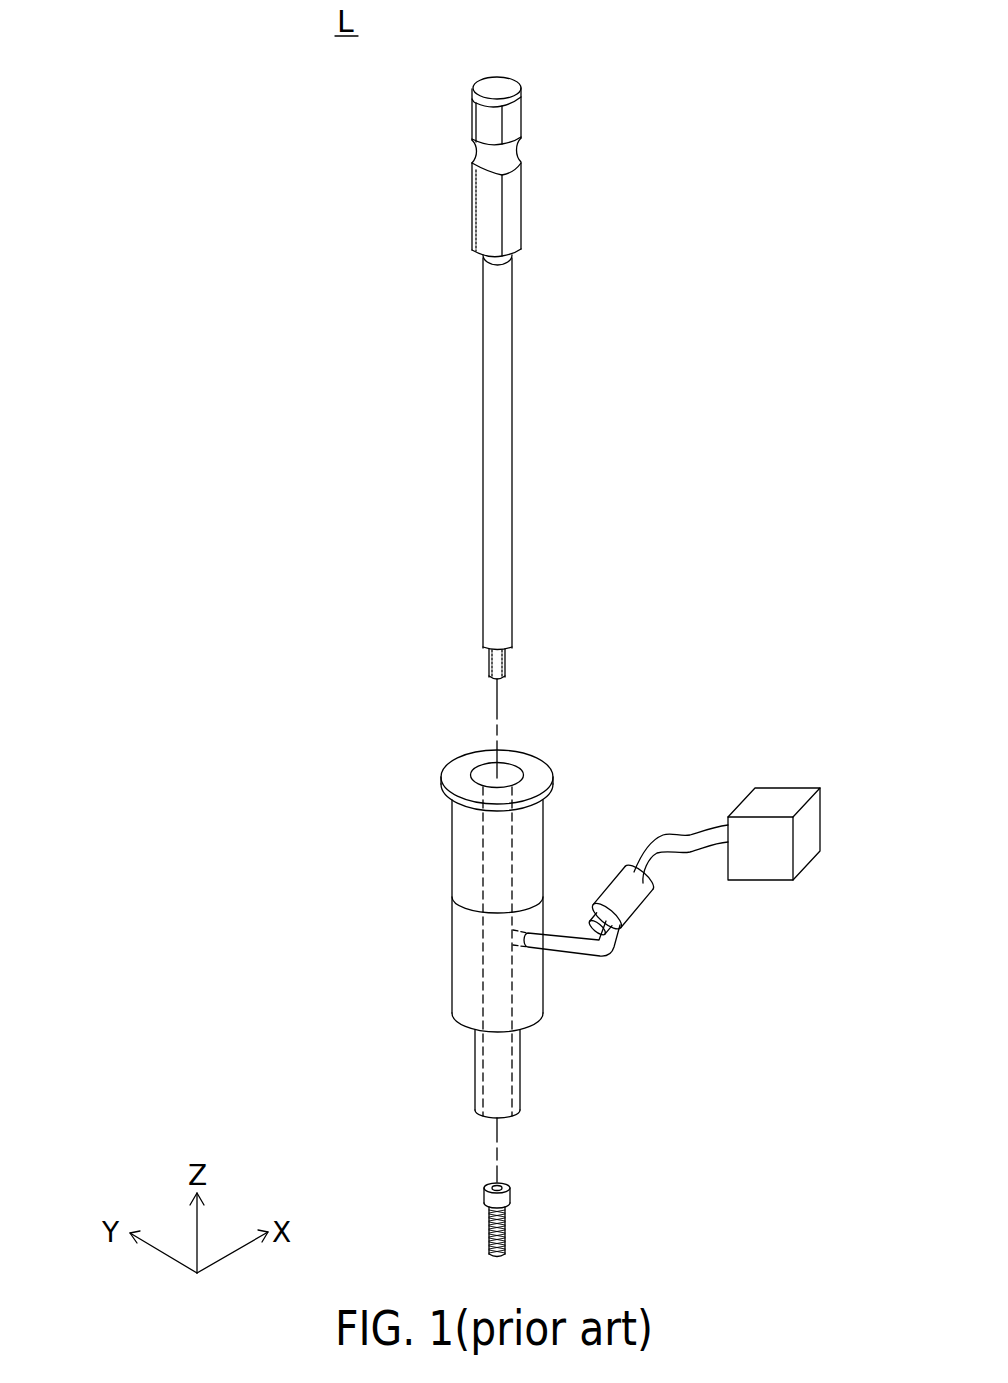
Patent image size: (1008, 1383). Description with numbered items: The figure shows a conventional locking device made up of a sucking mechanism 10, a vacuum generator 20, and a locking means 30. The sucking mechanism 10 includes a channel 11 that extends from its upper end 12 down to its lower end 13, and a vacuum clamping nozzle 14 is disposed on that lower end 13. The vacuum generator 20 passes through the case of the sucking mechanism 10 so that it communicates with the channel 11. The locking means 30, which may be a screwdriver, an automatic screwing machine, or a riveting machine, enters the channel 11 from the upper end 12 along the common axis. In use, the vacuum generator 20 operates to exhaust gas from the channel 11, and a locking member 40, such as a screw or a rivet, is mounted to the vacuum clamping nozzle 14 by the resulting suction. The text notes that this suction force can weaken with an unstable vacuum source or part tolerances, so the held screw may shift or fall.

The sucking mechanism 10 is at (451, 847).
The channel 11 is at (481, 958).
The upper end 12 is at (548, 740).
The lower end 13 is at (461, 1122).
The vacuum clamping nozzle 14 is at (522, 1070).
The vacuum generator 20 is at (780, 800).
The locking means 30 is at (525, 205).
The locking member 40 is at (512, 1195).